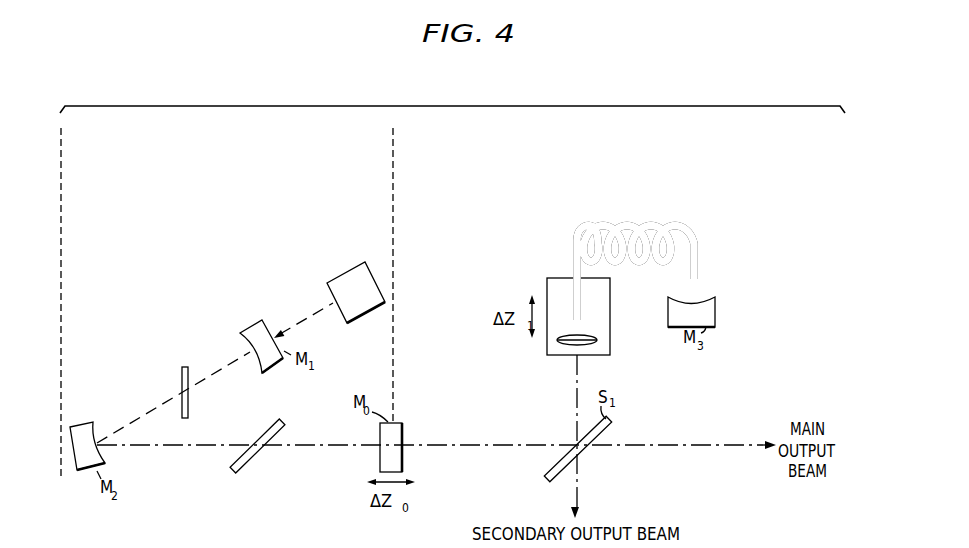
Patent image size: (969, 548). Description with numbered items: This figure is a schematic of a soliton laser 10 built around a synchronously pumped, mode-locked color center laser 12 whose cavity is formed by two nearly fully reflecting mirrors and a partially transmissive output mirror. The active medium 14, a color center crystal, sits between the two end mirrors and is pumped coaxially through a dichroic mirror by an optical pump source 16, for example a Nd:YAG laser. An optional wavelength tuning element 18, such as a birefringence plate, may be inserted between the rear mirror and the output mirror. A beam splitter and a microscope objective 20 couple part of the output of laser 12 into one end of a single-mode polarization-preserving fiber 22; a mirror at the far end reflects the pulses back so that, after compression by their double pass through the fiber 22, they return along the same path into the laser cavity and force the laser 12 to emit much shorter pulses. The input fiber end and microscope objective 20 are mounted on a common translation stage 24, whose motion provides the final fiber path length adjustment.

The soliton laser 10 is at (463, 106).
The mode-locked color center laser 12 is at (227, 302).
The active medium 14 is at (184, 366).
The optical pump source 16 is at (350, 273).
The wavelength tuning element 18 is at (257, 455).
The microscope objective 20 is at (594, 344).
The single-mode polarization-preserving fiber 22 is at (695, 209).
The translation stage 24 is at (560, 278).